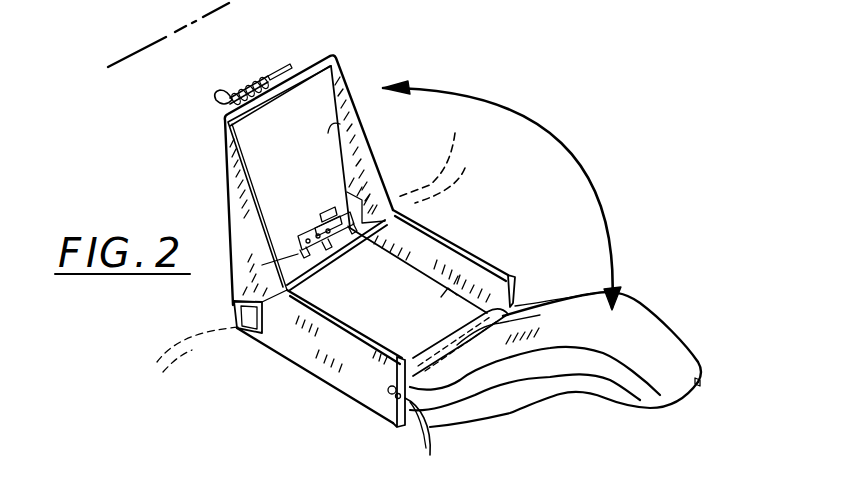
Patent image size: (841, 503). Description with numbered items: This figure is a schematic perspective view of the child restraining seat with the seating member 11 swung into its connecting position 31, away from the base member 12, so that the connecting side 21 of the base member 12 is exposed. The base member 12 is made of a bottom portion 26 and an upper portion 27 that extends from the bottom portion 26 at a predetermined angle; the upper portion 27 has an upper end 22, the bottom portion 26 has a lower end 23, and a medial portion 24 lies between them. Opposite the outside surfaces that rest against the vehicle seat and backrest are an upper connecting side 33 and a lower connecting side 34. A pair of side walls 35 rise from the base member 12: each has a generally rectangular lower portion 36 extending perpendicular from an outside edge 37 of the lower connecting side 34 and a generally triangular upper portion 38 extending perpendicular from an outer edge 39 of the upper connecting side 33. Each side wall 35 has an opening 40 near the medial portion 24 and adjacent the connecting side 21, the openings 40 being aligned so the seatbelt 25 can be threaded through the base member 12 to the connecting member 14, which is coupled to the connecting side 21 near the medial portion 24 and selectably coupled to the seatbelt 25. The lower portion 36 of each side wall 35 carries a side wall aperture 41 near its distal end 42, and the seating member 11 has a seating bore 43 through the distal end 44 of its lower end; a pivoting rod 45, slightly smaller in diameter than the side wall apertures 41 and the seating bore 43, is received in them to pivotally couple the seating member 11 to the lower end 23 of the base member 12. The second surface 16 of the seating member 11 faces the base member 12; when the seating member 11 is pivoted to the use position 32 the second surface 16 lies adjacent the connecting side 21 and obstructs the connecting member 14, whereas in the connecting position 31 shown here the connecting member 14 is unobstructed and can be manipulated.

The seating member 11 is at (575, 397).
The base member 12 is at (449, 120).
The connecting member 14 is at (303, 195).
The second surface 16 is at (665, 352).
The connecting side 21 is at (320, 101).
The upper end 22 is at (320, 70).
The lower end 23 is at (580, 267).
The medial portion 24 is at (380, 242).
The seatbelt 25 is at (460, 168).
The bottom portion 26 is at (418, 288).
The upper portion 27 is at (257, 137).
The connecting position 31 is at (690, 245).
The use position 32 is at (402, 55).
The upper connecting side 33 is at (252, 117).
The lower connecting side 34 is at (318, 340).
The side wall 35 is at (285, 345).
The lower portion 36 is at (468, 285).
The outside edge 37 is at (441, 297).
The upper portion 38 is at (350, 142).
The outer edge 39 is at (335, 108).
The opening 40 is at (243, 327).
The side wall aperture 41 is at (410, 400).
The distal end 42 is at (410, 400).
The seating bore 43 is at (520, 322).
The distal end 44 is at (437, 337).
The pivoting rod 45 is at (385, 392).